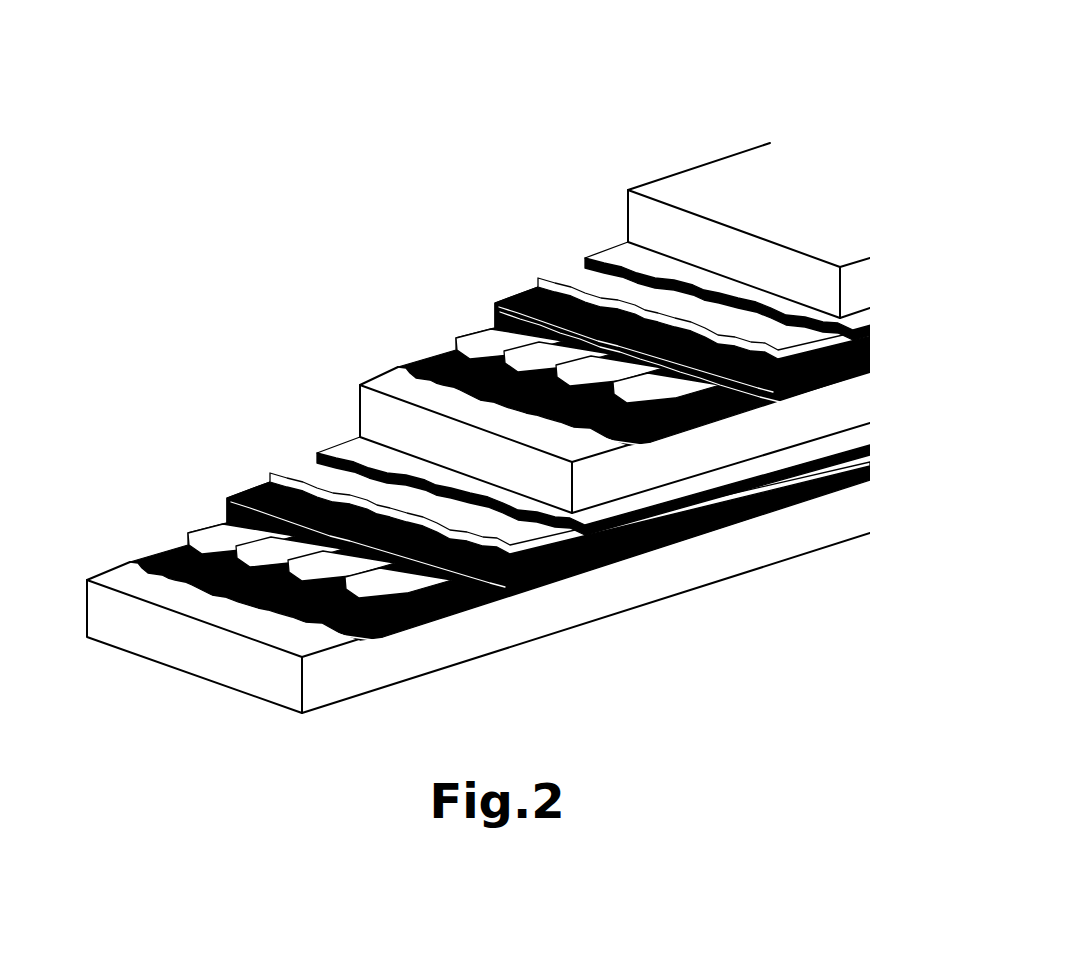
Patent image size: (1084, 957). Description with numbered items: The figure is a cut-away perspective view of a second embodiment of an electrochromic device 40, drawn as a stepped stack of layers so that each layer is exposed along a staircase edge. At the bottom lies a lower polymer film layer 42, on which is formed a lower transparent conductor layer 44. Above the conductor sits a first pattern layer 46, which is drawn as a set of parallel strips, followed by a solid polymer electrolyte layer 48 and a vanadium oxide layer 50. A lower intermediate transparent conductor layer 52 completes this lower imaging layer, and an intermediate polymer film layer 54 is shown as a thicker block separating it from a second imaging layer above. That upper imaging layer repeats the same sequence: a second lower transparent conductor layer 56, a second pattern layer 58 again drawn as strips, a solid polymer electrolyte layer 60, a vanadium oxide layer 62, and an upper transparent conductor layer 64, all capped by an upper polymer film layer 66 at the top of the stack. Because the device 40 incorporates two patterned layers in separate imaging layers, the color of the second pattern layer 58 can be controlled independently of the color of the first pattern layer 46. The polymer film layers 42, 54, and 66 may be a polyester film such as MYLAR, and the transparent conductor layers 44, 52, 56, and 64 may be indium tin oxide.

The electrochromic device 40 is at (343, 38).
The lower polymer film layer 42 is at (98, 578).
The lower transparent conductor layer 44 is at (160, 545).
The first pattern layer 46 is at (207, 527).
The solid polymer electrolyte layer 48 is at (253, 487).
The vanadium oxide layer 50 is at (293, 458).
The lower intermediate transparent conductor layer 52 is at (352, 437).
The intermediate polymer film layer 54 is at (378, 375).
The second lower transparent conductor layer 56 is at (435, 350).
The second pattern layer 58 is at (472, 325).
The solid polymer electrolyte layer 60 is at (522, 290).
The vanadium oxide layer 62 is at (570, 262).
The upper transparent conductor layer 64 is at (613, 245).
The upper polymer film layer 66 is at (663, 175).